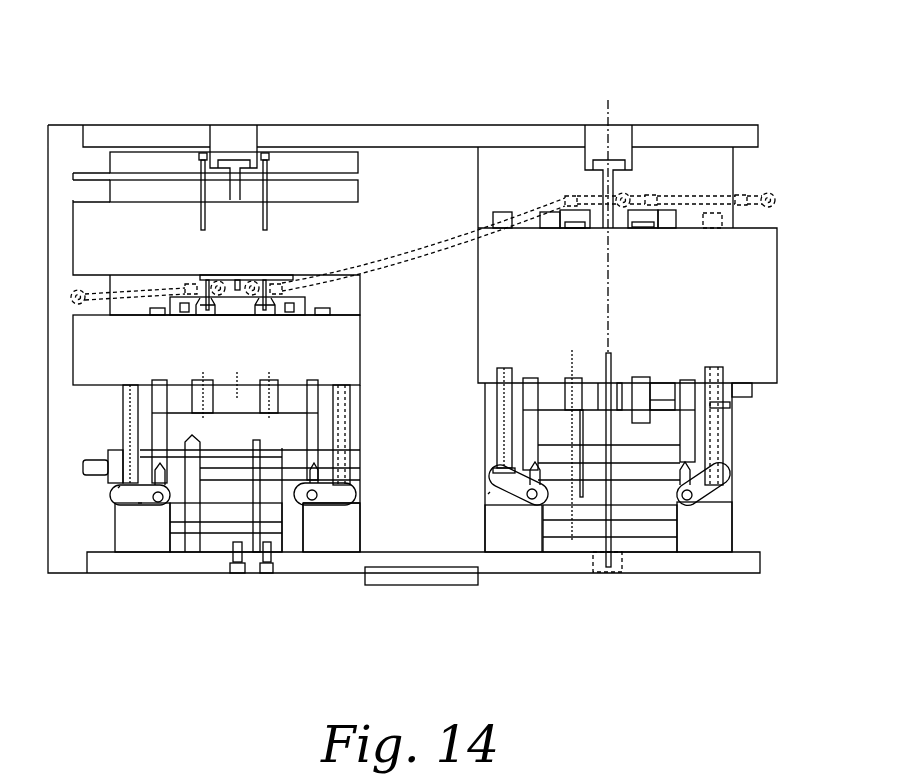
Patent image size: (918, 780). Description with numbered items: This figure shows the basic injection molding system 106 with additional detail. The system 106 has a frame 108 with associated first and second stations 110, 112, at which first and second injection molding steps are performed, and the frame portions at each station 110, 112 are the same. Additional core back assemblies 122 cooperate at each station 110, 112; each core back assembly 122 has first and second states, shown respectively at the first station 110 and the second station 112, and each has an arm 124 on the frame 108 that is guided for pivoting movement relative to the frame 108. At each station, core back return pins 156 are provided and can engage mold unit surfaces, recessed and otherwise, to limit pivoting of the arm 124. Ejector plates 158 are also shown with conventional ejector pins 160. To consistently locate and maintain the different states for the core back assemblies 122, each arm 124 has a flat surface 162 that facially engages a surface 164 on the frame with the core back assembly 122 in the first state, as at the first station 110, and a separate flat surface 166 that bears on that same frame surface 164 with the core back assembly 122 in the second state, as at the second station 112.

The system 106 is at (628, 72).
The frame 108 is at (434, 583).
The first station 110 is at (66, 408).
The second station 112 is at (752, 336).
The core back assembly 122 is at (156, 532).
The arm 124 is at (115, 492).
The core back return pins 156 is at (158, 388).
The ejector plates 158 is at (220, 528).
The ejector pins 160 is at (238, 573).
The flat surface 162 is at (140, 503).
The frame surface 164 is at (118, 488).
The separate flat surface 166 is at (533, 500).